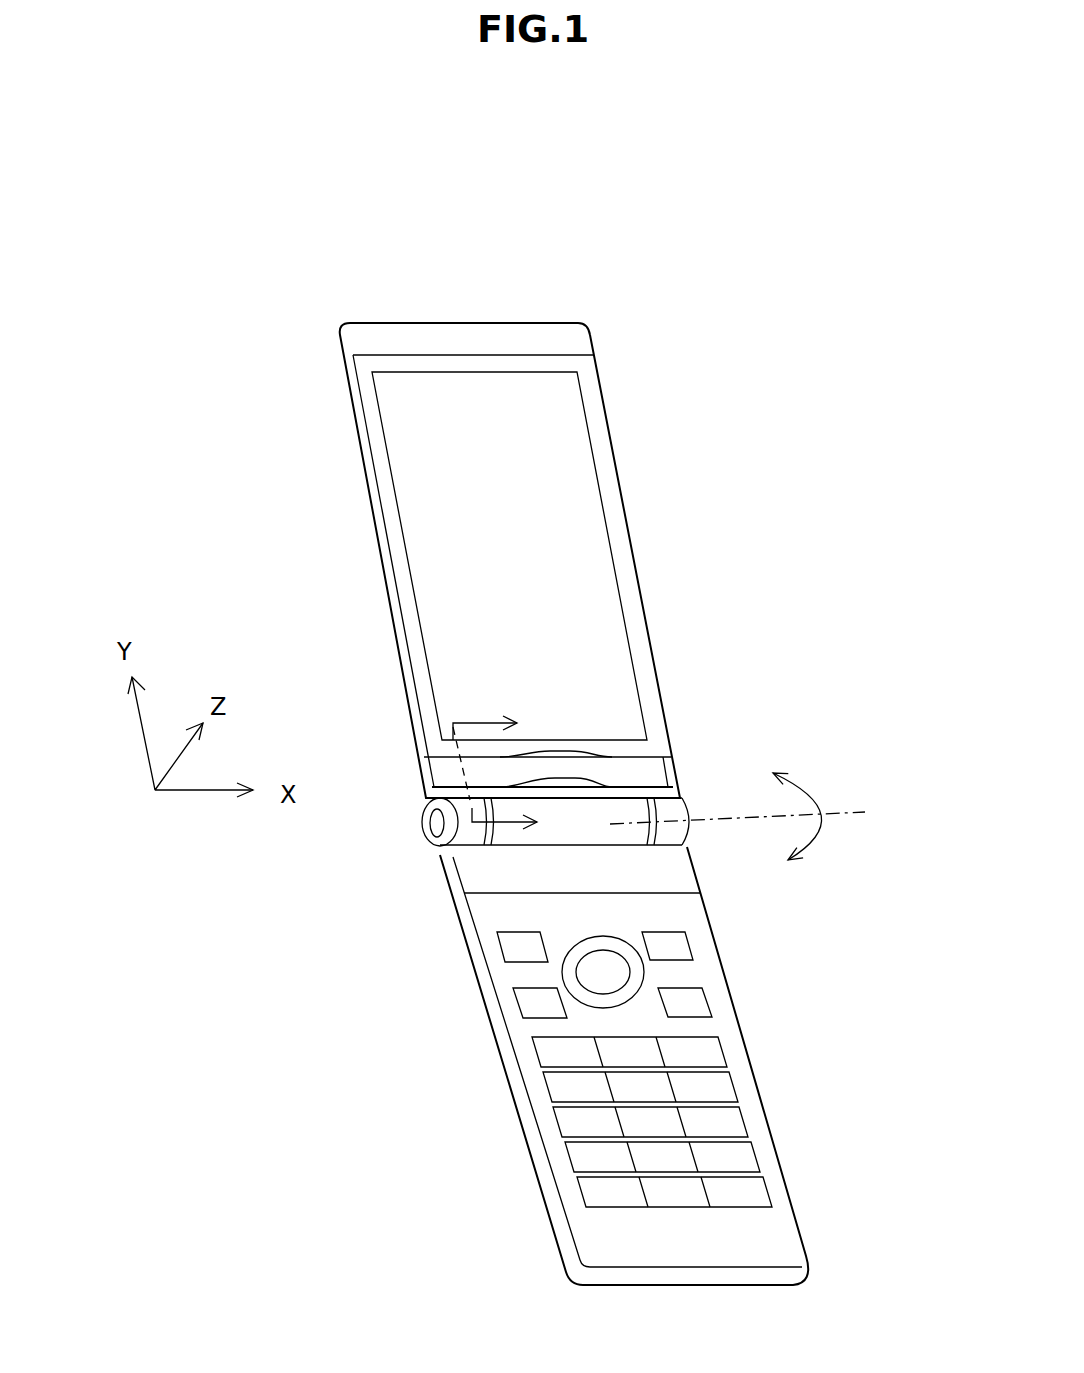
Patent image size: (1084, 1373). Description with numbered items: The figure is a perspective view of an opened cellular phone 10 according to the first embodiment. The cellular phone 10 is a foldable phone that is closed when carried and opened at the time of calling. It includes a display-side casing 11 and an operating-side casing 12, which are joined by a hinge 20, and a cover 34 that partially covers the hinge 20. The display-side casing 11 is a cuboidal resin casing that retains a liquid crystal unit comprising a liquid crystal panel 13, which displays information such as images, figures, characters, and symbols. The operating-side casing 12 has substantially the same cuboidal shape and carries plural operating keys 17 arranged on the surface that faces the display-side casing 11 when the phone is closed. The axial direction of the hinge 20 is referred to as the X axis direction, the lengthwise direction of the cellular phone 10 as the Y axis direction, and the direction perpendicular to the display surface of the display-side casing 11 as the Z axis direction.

The cellular phone 10 is at (616, 199).
The display-side casing 11 is at (640, 526).
The operating-side casing 12 is at (762, 1051).
The liquid crystal panel 13 is at (438, 542).
The operating keys 17 is at (580, 1088).
The hinge 20 is at (692, 775).
The cover 34 is at (497, 773).